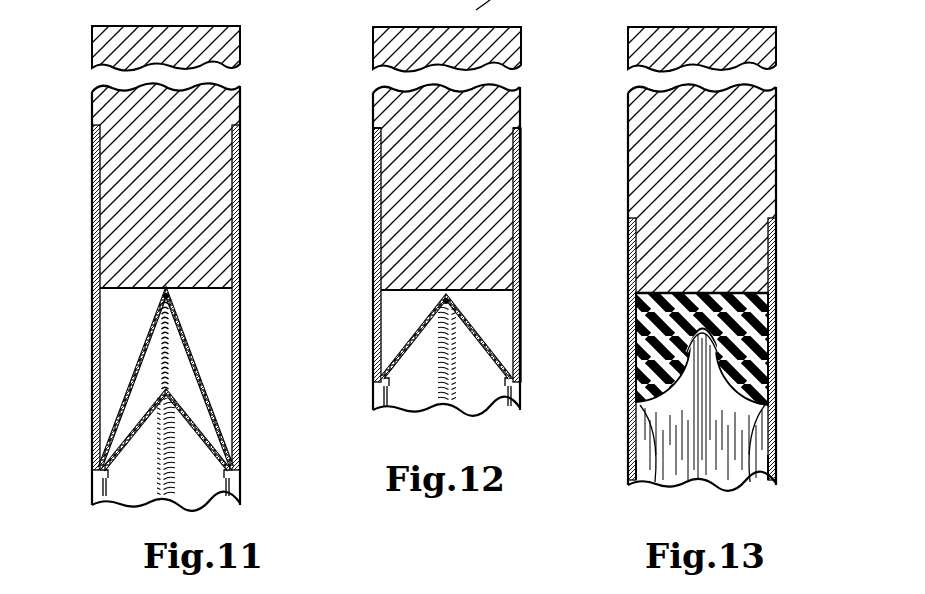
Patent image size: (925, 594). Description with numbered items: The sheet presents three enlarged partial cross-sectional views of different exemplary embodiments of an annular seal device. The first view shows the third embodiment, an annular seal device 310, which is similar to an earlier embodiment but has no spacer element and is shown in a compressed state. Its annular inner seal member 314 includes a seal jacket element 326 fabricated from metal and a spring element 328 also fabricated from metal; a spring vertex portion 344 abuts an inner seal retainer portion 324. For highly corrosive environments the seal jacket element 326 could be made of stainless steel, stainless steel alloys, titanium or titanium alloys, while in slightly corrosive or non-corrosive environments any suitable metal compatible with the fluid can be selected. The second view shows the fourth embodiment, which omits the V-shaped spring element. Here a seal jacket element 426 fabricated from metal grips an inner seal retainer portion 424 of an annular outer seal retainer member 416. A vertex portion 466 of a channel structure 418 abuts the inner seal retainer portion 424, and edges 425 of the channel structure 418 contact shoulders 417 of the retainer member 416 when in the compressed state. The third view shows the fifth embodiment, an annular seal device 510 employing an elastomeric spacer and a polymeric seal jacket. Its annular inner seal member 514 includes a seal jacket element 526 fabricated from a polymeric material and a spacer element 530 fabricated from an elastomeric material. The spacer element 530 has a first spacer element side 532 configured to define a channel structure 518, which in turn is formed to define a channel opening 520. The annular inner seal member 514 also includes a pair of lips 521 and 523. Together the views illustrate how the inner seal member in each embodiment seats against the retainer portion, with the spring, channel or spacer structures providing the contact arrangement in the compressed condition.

In FIG. 11, the annular seal device 310 is at (182, 268).
In FIG. 11, the annular inner seal member 314 is at (182, 296).
In FIG. 11, the inner seal retainer portion 324 is at (127, 263).
In FIG. 11, the seal jacket element 326 is at (243, 335).
In FIG. 11, the spring element 328 is at (200, 381).
In FIG. 11, the spring vertex portion 344 is at (172, 296).
In FIG. 12, the annular outer seal retainer member 416 is at (443, 237).
In FIG. 12, the shoulders 417 is at (375, 141).
In FIG. 12, the inner seal retainer portion 424 is at (395, 208).
In FIG. 12, the edges 425 is at (378, 165).
In FIG. 12, the seal jacket element 426 is at (522, 335).
In FIG. 12, the vertex portion 466 is at (455, 300).
In FIG. 12, the channel structure 418 is at (403, 357).
In FIG. 13, the annular seal device 510 is at (704, 274).
In FIG. 13, the annular inner seal member 514 is at (704, 302).
In FIG. 13, the spacer element 530 is at (630, 258).
In FIG. 13, the channel structure 518 is at (667, 407).
In FIG. 13, the channel opening 520 is at (751, 472).
In FIG. 13, the lip 521 is at (648, 405).
In FIG. 13, the lip 523 is at (770, 420).
In FIG. 13, the first spacer element side 532 is at (632, 470).
In FIG. 13, the seal jacket element 526 is at (776, 462).